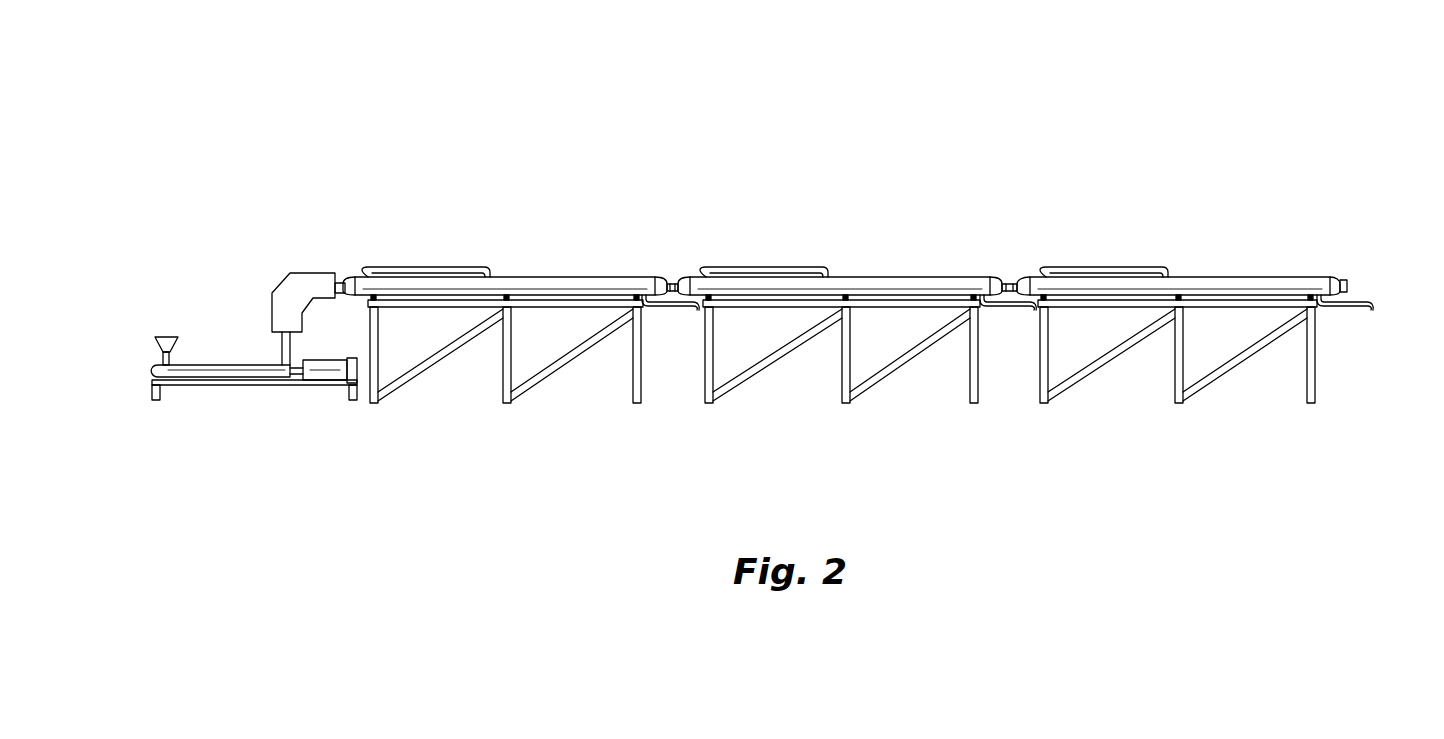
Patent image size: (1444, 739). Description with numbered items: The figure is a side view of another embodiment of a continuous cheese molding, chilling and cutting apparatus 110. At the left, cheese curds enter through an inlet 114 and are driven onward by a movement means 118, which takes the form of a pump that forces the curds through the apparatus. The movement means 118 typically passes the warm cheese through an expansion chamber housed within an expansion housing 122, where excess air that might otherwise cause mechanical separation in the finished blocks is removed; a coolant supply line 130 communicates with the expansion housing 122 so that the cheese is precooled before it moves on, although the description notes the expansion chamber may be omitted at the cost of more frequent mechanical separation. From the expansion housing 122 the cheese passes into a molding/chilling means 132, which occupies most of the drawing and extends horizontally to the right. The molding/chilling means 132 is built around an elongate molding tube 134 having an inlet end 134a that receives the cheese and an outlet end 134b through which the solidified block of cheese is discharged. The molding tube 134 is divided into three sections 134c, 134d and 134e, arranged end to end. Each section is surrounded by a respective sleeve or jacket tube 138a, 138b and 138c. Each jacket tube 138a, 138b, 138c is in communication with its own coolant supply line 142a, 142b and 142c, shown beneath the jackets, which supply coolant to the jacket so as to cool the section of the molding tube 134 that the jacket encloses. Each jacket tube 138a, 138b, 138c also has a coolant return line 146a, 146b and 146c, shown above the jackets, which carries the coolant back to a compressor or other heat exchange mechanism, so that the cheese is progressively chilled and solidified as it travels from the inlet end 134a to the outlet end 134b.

The continuous molding, chilling and cutting apparatus 110 is at (809, 133).
The inlet 114 is at (155, 336).
The movement means 118 is at (278, 381).
The expansion housing 122 is at (297, 293).
The coolant supply line 130 is at (305, 328).
The molding/chilling means 132 is at (502, 219).
The molding tube 134 is at (668, 283).
The inlet end 134a is at (350, 278).
The outlet end 134b is at (1343, 280).
The first section of molding tube 134c is at (338, 281).
The second section of molding tube 134d is at (1005, 278).
The third section of molding tube 134e is at (1014, 278).
The jacket tube 138a is at (550, 277).
The jacket tube 138b is at (932, 277).
The jacket tube 138c is at (1232, 277).
The coolant supply line 142a is at (697, 310).
The coolant supply line 142b is at (1033, 310).
The coolant supply line 142c is at (1370, 308).
The coolant return line 146a is at (482, 265).
The coolant return line 146b is at (822, 266).
The coolant return line 146c is at (1162, 266).